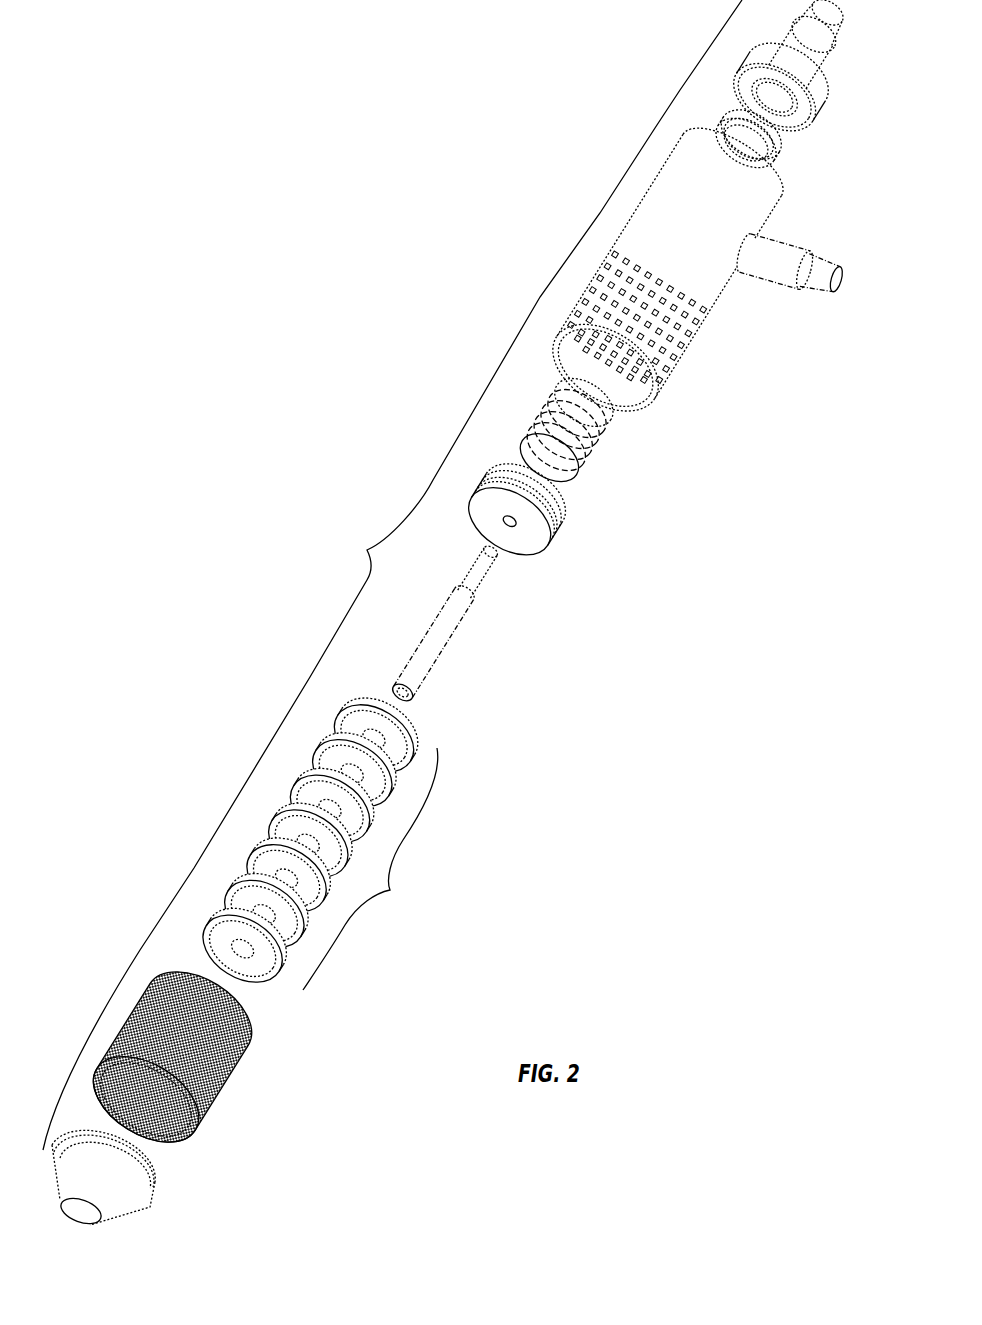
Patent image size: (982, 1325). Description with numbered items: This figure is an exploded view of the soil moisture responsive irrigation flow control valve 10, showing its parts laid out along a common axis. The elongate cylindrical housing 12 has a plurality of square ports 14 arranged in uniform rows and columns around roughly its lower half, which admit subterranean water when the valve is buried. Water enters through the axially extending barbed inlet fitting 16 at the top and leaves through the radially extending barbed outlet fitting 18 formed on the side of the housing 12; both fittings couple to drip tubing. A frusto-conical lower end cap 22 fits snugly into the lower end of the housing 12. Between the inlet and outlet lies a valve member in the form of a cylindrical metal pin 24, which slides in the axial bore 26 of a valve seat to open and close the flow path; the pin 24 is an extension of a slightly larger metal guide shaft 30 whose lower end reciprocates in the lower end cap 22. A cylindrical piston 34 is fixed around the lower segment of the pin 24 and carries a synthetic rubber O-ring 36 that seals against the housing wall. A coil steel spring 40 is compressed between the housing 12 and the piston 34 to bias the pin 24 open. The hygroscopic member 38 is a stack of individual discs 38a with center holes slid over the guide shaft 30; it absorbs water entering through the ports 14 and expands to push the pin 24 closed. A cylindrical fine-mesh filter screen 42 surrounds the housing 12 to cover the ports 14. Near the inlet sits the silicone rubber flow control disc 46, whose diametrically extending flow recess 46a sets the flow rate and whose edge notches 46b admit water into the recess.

The soil moisture responsive irrigation flow control valve 10 is at (367, 548).
The cylindrical housing 12 is at (691, 271).
The ports 14 is at (658, 370).
The barbed inlet fitting 16 is at (800, 48).
The barbed outlet fitting 18 is at (775, 238).
The lower end cap 22 is at (137, 1203).
The pin 24 is at (480, 577).
The axial bore 26 is at (500, 523).
The guide shaft 30 is at (440, 647).
The piston 34 is at (534, 509).
The O-ring 36 is at (560, 535).
The hygroscopic member 38 is at (321, 866).
The hygroscopic discs 38a is at (260, 973).
The coil spring 40 is at (580, 467).
The filter screen 42 is at (230, 1083).
The flow control disc 46 is at (770, 136).
The flow recess 46a is at (747, 143).
The notches 46b is at (773, 153).